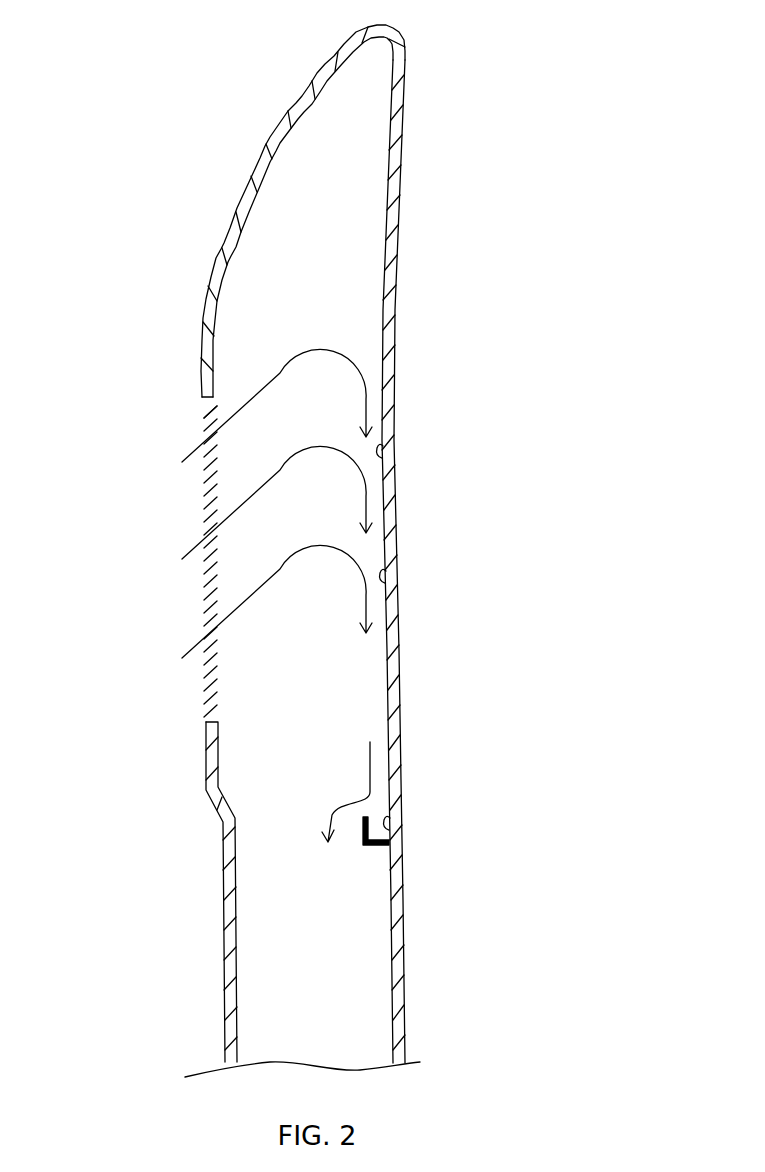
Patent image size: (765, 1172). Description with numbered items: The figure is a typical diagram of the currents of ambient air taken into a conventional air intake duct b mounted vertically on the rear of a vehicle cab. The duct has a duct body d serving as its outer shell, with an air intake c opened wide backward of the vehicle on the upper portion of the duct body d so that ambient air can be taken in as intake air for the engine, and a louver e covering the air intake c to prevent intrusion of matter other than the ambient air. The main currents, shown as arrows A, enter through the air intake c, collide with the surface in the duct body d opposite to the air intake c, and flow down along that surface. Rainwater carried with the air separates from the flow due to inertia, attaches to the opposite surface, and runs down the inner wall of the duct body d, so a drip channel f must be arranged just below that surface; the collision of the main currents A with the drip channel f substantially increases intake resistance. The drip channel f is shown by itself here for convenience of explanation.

The air intake duct b is at (369, 544).
The duct body d is at (396, 357).
The air intake c is at (200, 514).
The louver e is at (206, 433).
The drip channel f is at (362, 845).
The main currents A is at (282, 372).